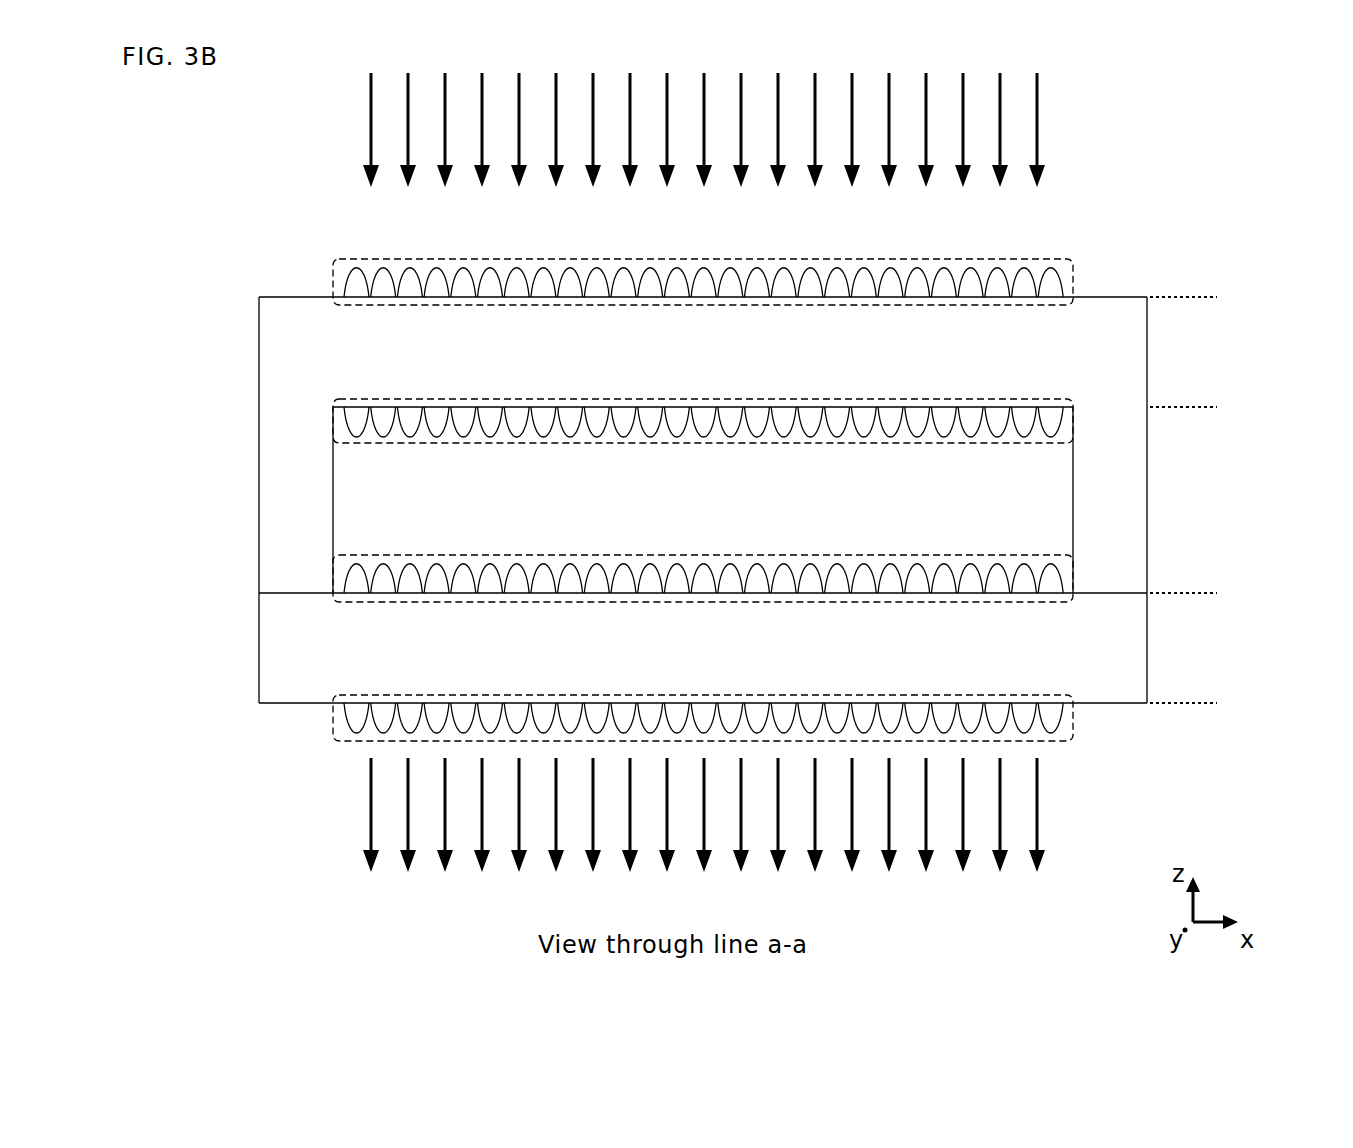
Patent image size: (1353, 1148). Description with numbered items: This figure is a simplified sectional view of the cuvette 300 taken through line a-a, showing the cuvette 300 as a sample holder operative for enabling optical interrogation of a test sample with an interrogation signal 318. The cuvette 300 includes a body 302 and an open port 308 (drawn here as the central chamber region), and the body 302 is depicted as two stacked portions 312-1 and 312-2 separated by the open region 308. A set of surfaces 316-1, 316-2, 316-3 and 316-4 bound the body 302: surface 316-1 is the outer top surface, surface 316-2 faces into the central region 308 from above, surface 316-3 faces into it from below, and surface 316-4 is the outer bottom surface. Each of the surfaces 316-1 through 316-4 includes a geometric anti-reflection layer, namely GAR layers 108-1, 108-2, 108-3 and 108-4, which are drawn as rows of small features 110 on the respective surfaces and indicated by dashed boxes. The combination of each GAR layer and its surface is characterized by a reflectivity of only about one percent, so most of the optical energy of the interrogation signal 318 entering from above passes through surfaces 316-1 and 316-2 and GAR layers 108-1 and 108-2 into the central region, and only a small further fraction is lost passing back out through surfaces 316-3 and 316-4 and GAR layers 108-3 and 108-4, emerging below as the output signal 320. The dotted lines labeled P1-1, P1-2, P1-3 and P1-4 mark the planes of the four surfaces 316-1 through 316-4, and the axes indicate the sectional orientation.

The cuvette 300 is at (264, 155).
The body 302 is at (210, 274).
The open port 308 is at (912, 515).
The first body portion 312-1 is at (350, 383).
The second body portion 312-2 is at (347, 681).
The geometric anti-reflection layer 108-1 is at (671, 259).
The geometric anti-reflection layer 108-2 is at (337, 438).
The geometric anti-reflection layer 108-3 is at (340, 567).
The geometric anti-reflection layer 108-4 is at (333, 720).
The features 110 is at (717, 280).
The surface 316-1 is at (1148, 238).
The surface 316-2 is at (765, 400).
The surface 316-3 is at (765, 600).
The surface 316-4 is at (1116, 714).
The interrogation signal 318 is at (1148, 130).
The interrogation signal 320 is at (320, 834).
The first plane P1-1 is at (1190, 299).
The second plane P1-2 is at (1190, 409).
The third plane P1-3 is at (1190, 595).
The fourth plane P1-4 is at (1190, 705).